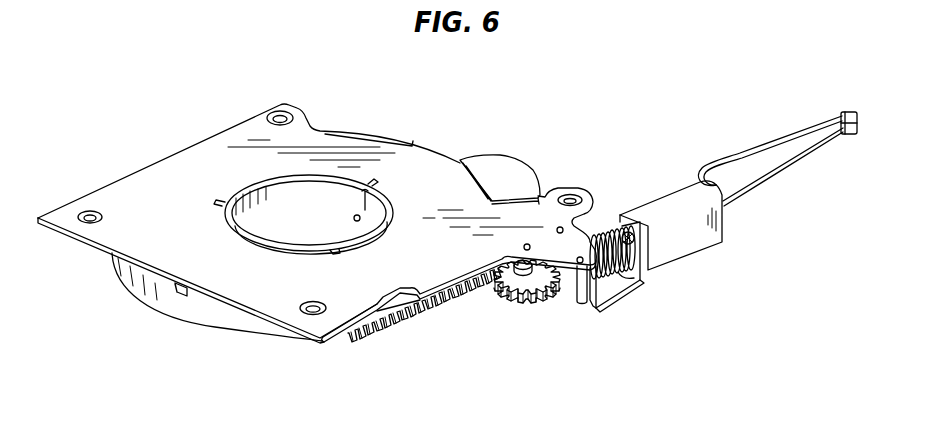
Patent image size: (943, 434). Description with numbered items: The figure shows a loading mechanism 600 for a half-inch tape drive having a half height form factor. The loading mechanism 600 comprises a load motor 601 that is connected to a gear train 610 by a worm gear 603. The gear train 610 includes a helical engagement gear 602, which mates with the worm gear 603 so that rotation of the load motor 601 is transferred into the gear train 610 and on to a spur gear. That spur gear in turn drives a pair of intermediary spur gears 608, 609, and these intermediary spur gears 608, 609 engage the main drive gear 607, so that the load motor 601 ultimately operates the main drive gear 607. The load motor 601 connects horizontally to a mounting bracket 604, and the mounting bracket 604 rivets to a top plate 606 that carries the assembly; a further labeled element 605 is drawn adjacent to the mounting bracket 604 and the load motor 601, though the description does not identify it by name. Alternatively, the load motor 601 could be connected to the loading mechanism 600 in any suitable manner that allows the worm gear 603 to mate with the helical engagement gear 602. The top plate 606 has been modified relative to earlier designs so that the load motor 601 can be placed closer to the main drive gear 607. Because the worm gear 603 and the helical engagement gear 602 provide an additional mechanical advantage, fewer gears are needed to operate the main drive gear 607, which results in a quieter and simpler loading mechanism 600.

The loading mechanism 600 is at (585, 104).
The load motor 601 is at (687, 242).
The helical engagement gear 602 is at (597, 301).
The worm gear 603 is at (603, 235).
The mounting bracket 604 is at (627, 281).
The motor bracket 605 is at (647, 277).
The top plate 606 is at (326, 343).
The main drive gear 607 is at (442, 318).
The intermediary spur gear 608 is at (527, 306).
The intermediary spur gear 609 is at (562, 288).
The gear train 610 is at (500, 322).